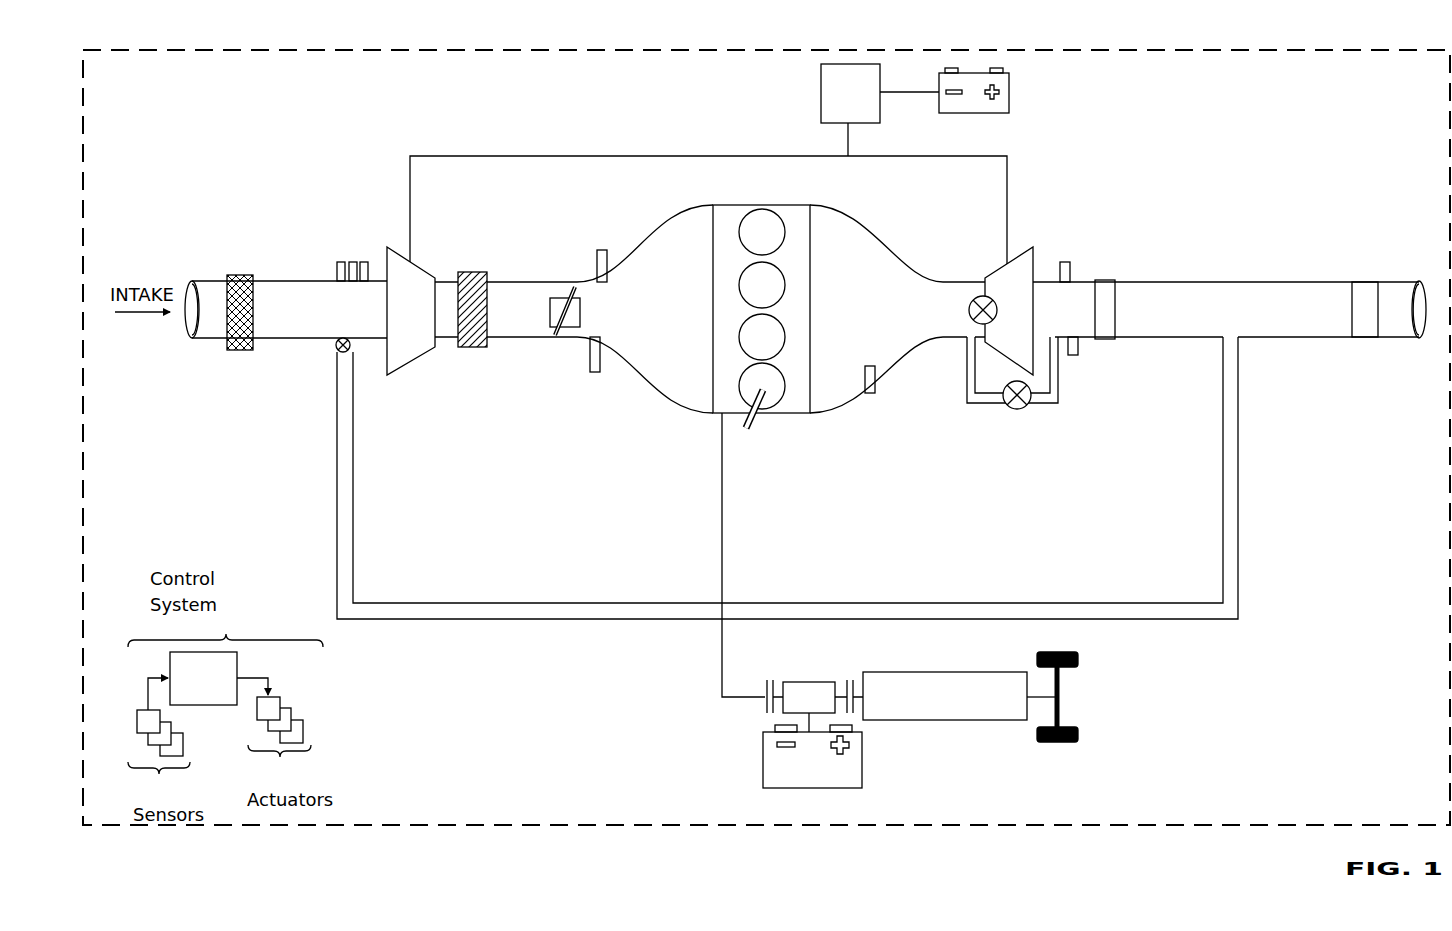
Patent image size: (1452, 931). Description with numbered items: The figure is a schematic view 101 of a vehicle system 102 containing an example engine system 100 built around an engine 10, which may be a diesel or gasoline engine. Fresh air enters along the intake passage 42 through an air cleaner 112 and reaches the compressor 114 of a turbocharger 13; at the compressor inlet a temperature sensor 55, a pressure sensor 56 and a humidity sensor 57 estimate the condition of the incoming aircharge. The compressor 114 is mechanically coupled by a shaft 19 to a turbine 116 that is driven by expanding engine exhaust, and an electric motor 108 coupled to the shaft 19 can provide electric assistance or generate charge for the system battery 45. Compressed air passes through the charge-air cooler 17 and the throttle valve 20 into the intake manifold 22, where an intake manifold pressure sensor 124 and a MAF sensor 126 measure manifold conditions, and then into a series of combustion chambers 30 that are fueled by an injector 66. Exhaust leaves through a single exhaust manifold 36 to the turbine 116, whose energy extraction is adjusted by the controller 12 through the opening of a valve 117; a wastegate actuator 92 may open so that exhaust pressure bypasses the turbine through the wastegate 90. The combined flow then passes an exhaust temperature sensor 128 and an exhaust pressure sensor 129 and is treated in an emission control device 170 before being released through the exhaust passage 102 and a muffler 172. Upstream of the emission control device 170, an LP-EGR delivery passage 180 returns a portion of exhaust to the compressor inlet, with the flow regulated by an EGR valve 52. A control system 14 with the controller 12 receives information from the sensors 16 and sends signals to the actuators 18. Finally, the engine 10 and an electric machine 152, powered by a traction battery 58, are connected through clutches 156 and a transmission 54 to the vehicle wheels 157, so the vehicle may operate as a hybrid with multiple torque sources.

The schematic view 101 is at (1378, 28).
The engine system 100 is at (1292, 160).
The engine 10 is at (847, 295).
The engine controller 12 is at (203, 678).
The turbocharger 13 is at (421, 323).
The control system 14 is at (225, 706).
The sensors 16 is at (159, 739).
The charge-air cooler 17 is at (473, 272).
The actuators 18 is at (274, 729).
The shaft 19 is at (705, 156).
The throttle valve 20 is at (572, 318).
The intake manifold 22 is at (645, 309).
The combustion chambers 30 is at (778, 230).
The exhaust manifold 36 is at (897, 309).
The intake passage 42 is at (208, 340).
The system battery 45 is at (975, 113).
The EGR valve 52 is at (335, 346).
The transmission 54 is at (988, 720).
The temperature sensor 55 is at (341, 262).
The pressure sensor 56 is at (353, 262).
The humidity sensor 57 is at (364, 262).
The traction battery 58 is at (862, 762).
The injector 66 is at (760, 422).
The wastegate 90 is at (967, 404).
The wastegate actuator 92 is at (1012, 410).
The exhaust passage 102 is at (1085, 50).
The electric motor 108 is at (850, 93).
The air cleaner 112 is at (238, 275).
The compressor 114 is at (431, 392).
The turbine 116 is at (1009, 311).
The valve 117 is at (968, 310).
The intake manifold pressure sensor 124 is at (597, 262).
The MAF sensor 126 is at (590, 357).
The exhaust temperature sensor 128 is at (1073, 356).
The exhaust pressure sensor 129 is at (1065, 262).
The electric machine 152 is at (802, 682).
The clutch 156 is at (766, 684).
The vehicle wheels 157 is at (1058, 742).
The emission control device 170 is at (1105, 280).
The muffler 172 is at (1366, 282).
The LP-EGR delivery passage 180 is at (783, 603).